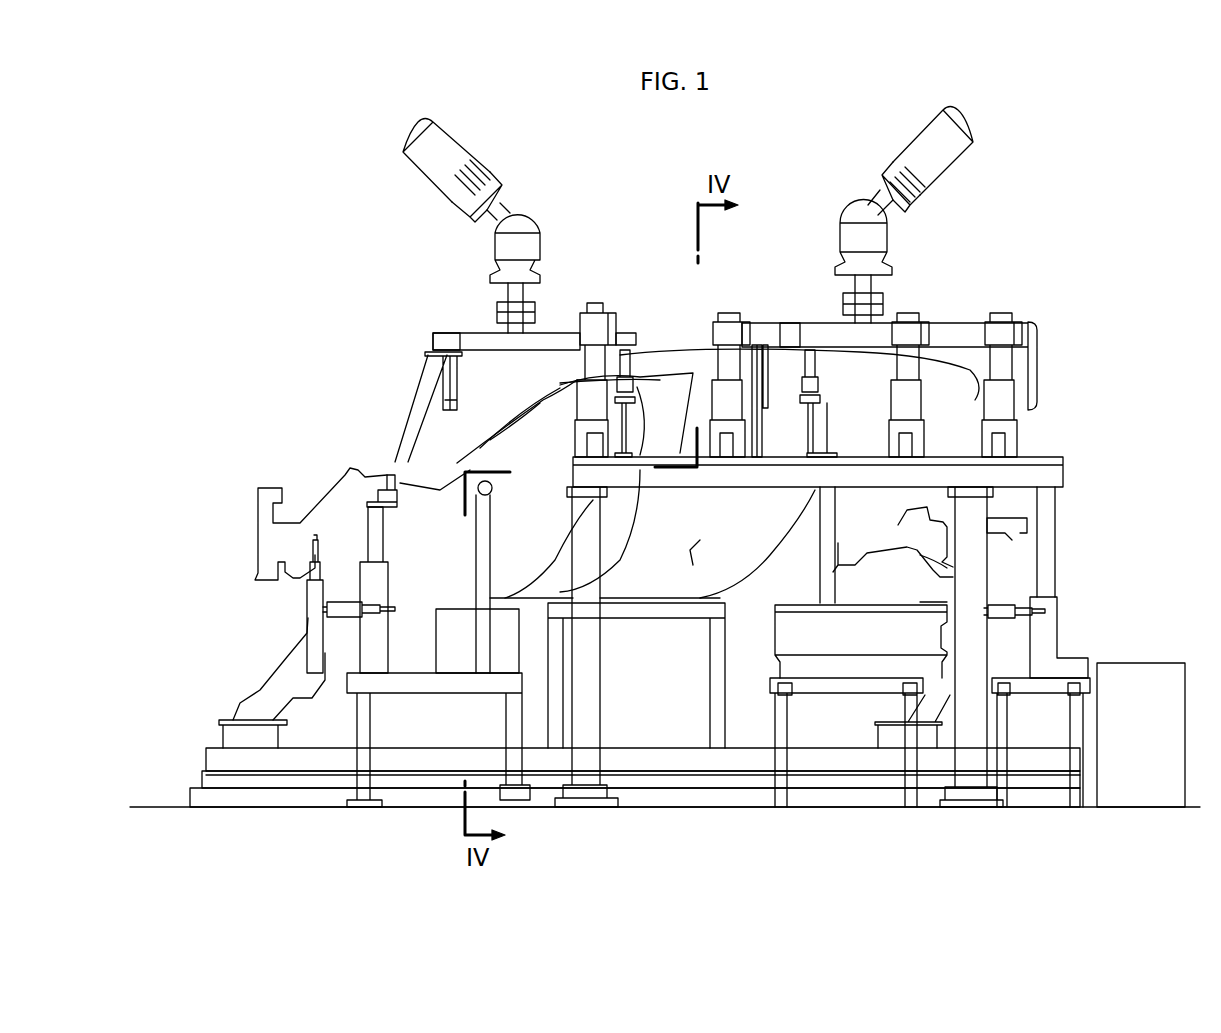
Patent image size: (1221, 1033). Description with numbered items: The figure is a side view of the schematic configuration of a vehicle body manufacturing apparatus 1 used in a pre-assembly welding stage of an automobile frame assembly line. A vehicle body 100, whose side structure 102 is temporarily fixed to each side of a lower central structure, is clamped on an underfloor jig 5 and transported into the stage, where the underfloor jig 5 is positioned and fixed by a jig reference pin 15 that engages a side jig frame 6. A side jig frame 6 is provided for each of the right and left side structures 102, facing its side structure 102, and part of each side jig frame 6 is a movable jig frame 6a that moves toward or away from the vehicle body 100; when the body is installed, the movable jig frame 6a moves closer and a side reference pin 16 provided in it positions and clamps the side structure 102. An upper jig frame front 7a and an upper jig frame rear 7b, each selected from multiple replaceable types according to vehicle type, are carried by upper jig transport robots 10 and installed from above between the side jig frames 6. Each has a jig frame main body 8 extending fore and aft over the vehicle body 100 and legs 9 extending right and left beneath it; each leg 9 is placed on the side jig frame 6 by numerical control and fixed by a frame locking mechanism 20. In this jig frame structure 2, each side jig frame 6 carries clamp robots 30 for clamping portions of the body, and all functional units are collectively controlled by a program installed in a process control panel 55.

The vehicle body manufacturing apparatus 1 is at (1114, 180).
The jig frame structure 2 is at (1080, 342).
The underfloor jig 5 is at (215, 760).
The side jig frame 6 is at (1063, 480).
The movable jig frame 6a is at (490, 540).
The upper jig frame front 7a is at (466, 312).
The upper jig frame rear 7b is at (806, 312).
The jig frame main body 8 is at (560, 333).
The leg 9 is at (415, 410).
The upper jig transport robot 10 is at (470, 165).
The jig reference pin 15 is at (330, 600).
The side reference pin 16 is at (492, 490).
The frame locking mechanism 20 is at (385, 485).
The clamp robot 30 is at (598, 300).
The process control panel 55 is at (1165, 663).
The vehicle body 100 is at (665, 330).
The side structure 102 is at (540, 405).